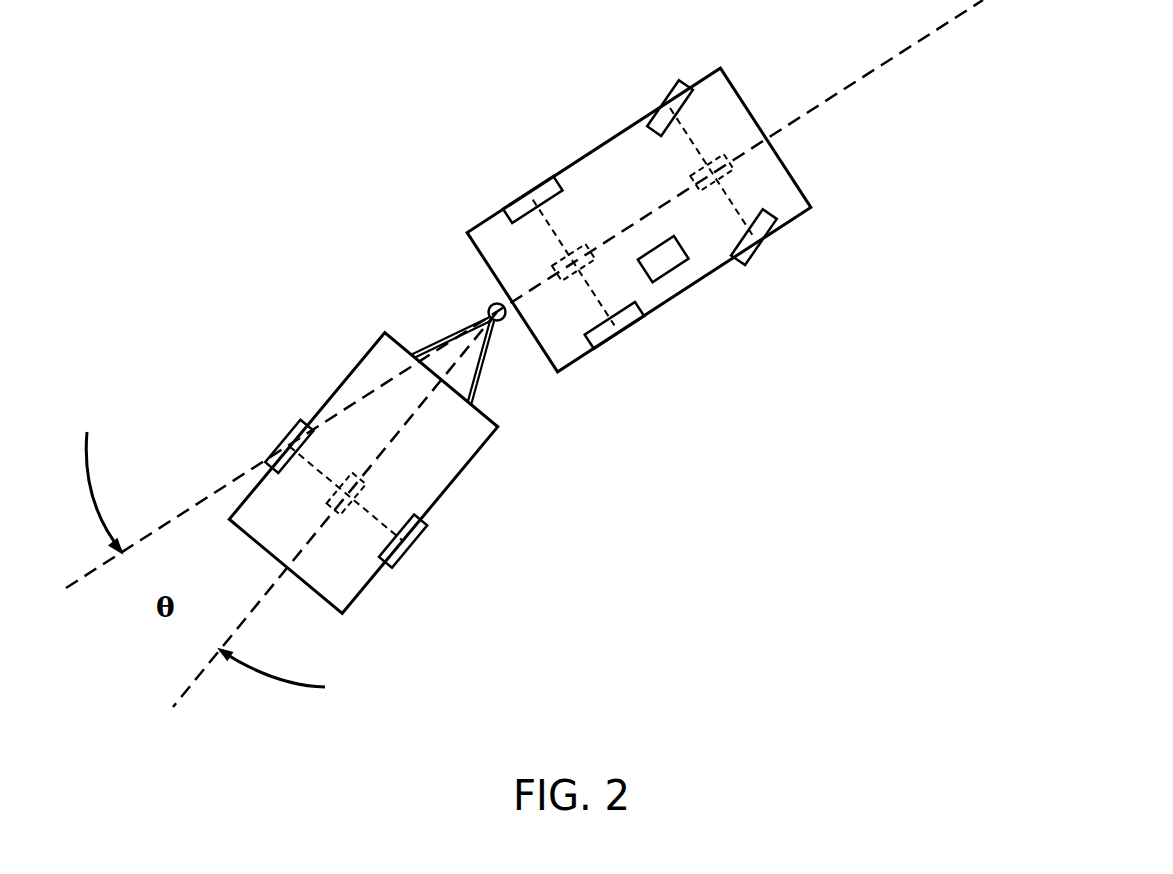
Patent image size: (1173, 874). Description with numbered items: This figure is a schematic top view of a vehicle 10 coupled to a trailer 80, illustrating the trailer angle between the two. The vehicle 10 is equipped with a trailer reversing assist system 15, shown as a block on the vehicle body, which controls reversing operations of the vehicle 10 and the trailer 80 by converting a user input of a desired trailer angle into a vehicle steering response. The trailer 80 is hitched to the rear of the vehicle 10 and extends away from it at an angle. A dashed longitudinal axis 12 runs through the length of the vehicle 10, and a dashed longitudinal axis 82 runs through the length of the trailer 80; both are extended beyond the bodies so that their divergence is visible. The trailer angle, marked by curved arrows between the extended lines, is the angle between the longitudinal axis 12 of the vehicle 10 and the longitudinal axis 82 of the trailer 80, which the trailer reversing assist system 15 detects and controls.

The vehicle 10 is at (607, 142).
The longitudinal axis of the vehicle 12 is at (910, 43).
The trailer reversing assist system 15 is at (671, 267).
The trailer 80 is at (344, 380).
The longitudinal axis of the trailer 82 is at (192, 686).